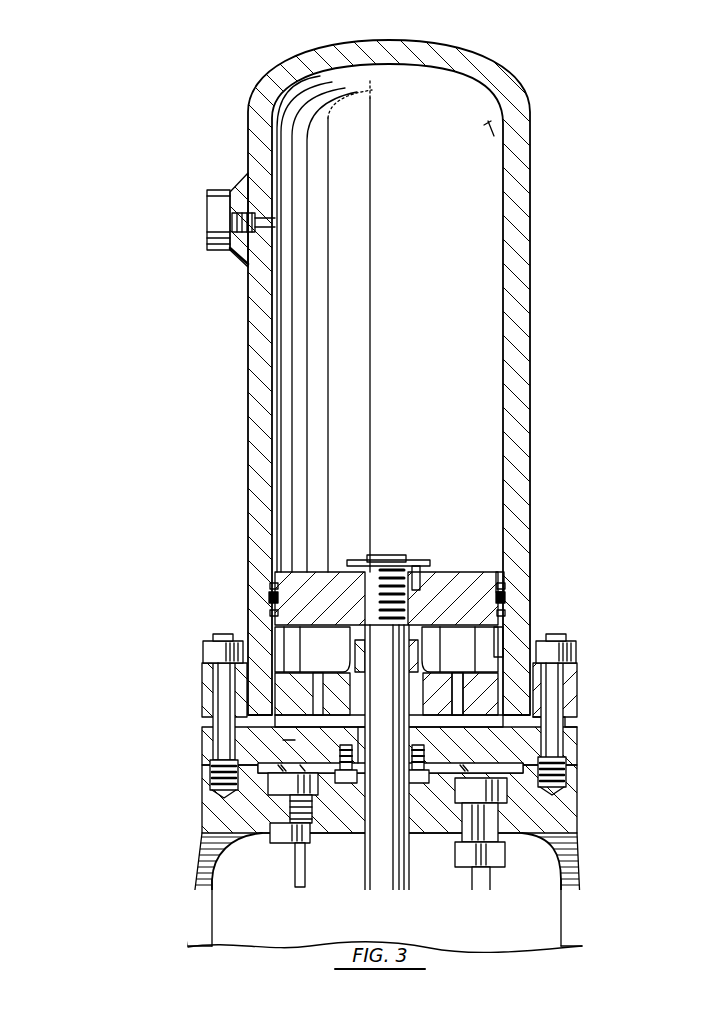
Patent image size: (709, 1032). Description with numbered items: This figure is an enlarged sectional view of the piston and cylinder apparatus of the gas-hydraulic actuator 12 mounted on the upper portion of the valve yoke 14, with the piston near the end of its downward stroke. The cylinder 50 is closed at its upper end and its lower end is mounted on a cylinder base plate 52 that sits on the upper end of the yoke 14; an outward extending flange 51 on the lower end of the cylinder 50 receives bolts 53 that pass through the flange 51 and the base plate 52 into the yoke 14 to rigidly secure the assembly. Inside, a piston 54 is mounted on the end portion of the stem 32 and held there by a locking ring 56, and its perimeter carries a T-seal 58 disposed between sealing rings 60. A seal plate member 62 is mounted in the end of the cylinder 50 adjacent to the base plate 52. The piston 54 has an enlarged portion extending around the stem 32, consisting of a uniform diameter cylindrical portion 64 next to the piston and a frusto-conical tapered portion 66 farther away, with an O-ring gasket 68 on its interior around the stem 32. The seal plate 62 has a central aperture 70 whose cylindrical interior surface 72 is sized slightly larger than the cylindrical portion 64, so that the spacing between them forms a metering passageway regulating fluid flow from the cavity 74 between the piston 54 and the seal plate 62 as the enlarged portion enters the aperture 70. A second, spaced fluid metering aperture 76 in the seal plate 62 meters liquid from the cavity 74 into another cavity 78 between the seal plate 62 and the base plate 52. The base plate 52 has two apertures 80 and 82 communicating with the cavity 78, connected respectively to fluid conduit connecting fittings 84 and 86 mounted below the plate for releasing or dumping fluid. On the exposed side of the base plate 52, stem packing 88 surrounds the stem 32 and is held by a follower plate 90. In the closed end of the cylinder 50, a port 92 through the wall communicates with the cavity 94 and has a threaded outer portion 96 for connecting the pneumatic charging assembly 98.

The gas-hydraulic actuator 12 is at (537, 191).
The yoke 14 is at (572, 886).
The stem 32 is at (402, 915).
The cylinder 50 is at (522, 252).
The flange 51 is at (577, 684).
The cylinder base plate 52 is at (530, 745).
The bolts 53 is at (222, 686).
The piston 54 is at (462, 573).
The locking ring 56 is at (410, 567).
The T-seal 58 is at (274, 597).
The sealing rings 60 is at (272, 580).
The seal plate member 62 is at (300, 677).
The cylindrical portion 64 is at (500, 576).
The tapered portion 66 is at (462, 680).
The O-ring gasket 68 is at (418, 652).
The aperture 70 is at (345, 698).
The interior surface 72 is at (310, 718).
The cavity 74 is at (500, 640).
The second aperture 76 is at (555, 716).
The cavity 78 is at (288, 742).
The aperture 80 is at (237, 772).
The aperture 82 is at (522, 768).
The fluid conduit connecting fitting 84 is at (287, 803).
The fluid conduit connecting fitting 86 is at (566, 823).
The stem packing 88 is at (348, 790).
The follower plate 90 is at (358, 790).
The port 92 is at (262, 222).
The cavity 94 is at (492, 127).
The threaded outer portion 96 is at (242, 240).
The pneumatic charging assembly 98 is at (202, 222).